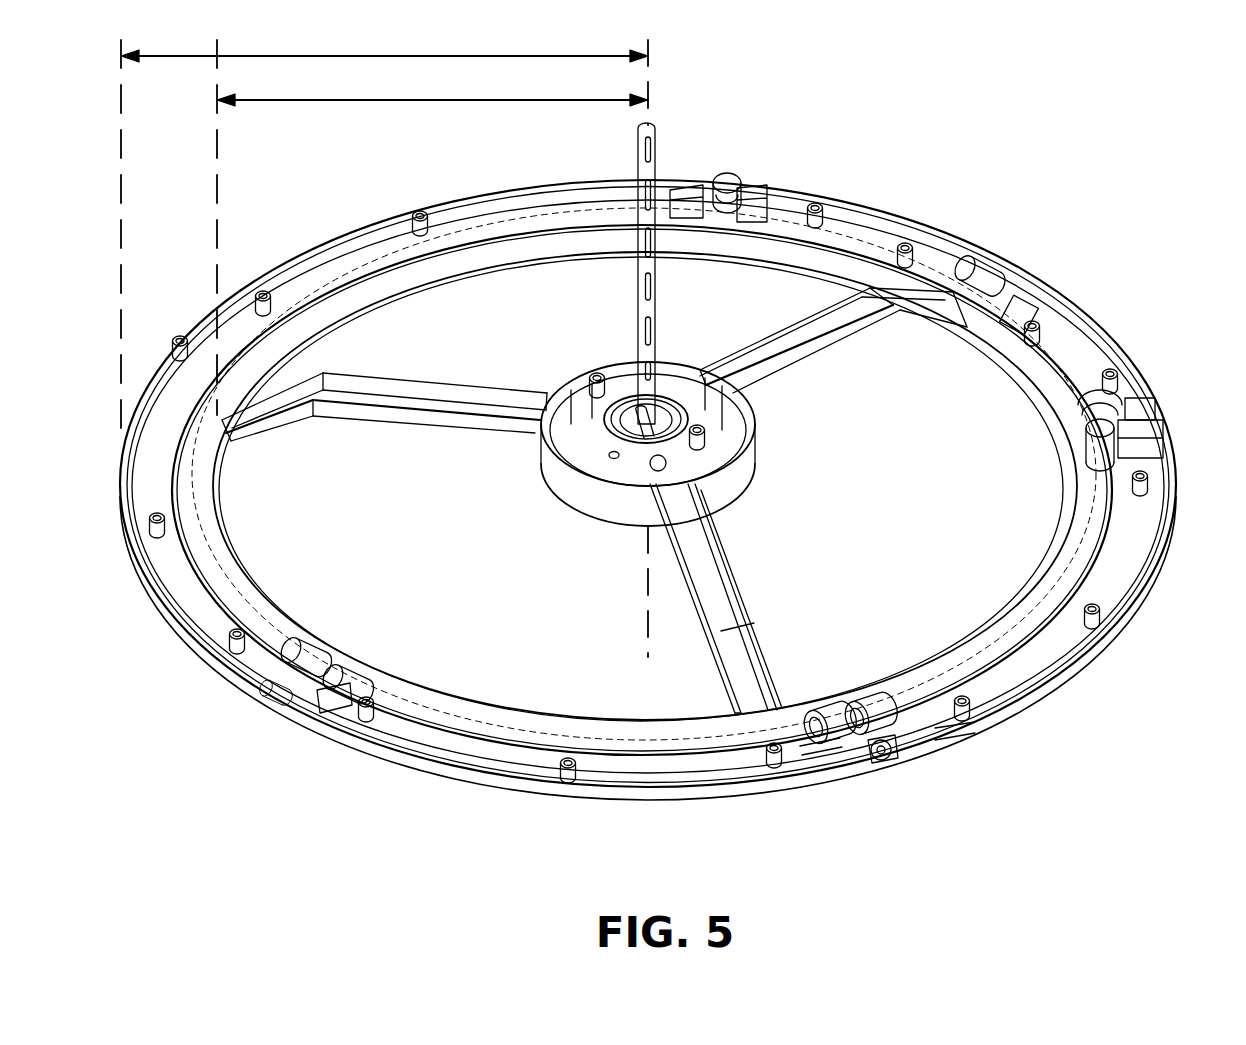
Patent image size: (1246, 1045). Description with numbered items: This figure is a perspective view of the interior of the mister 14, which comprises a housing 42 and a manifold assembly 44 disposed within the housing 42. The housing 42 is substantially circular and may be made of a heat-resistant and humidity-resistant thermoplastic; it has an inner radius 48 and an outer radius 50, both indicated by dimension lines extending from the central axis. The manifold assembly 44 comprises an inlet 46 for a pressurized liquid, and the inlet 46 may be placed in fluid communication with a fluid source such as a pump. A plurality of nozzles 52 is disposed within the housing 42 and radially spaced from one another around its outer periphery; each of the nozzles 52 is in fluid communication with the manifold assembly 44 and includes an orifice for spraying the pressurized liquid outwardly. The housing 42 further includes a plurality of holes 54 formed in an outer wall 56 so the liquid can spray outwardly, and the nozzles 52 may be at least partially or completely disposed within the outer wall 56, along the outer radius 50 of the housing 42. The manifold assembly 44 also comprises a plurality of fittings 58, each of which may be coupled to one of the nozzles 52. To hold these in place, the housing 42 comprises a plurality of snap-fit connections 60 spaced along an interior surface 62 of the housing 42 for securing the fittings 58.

The mister 14 is at (967, 186).
The housing 42 is at (1113, 353).
The manifold assembly 44 is at (1053, 317).
The inlet 46 is at (653, 123).
The inner radius 48 is at (432, 227).
The outer radius 50 is at (384, 231).
The nozzles 52 is at (885, 753).
The holes 54 is at (882, 762).
The outer wall 56 is at (958, 735).
The fittings 58 is at (878, 697).
The snap-fit connections 60 is at (832, 745).
The interior surface 62 is at (932, 715).